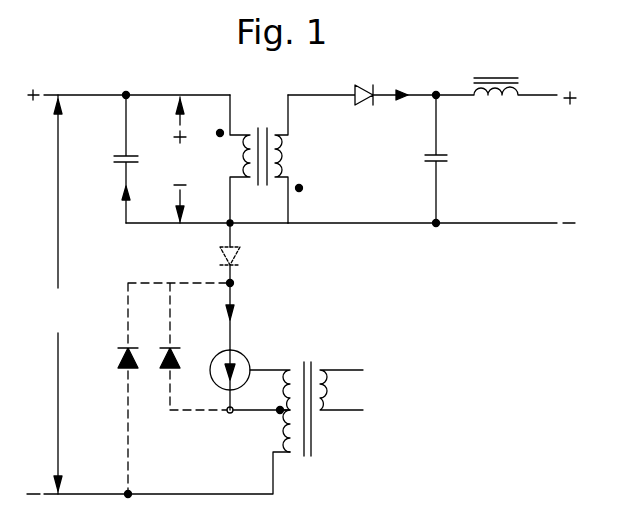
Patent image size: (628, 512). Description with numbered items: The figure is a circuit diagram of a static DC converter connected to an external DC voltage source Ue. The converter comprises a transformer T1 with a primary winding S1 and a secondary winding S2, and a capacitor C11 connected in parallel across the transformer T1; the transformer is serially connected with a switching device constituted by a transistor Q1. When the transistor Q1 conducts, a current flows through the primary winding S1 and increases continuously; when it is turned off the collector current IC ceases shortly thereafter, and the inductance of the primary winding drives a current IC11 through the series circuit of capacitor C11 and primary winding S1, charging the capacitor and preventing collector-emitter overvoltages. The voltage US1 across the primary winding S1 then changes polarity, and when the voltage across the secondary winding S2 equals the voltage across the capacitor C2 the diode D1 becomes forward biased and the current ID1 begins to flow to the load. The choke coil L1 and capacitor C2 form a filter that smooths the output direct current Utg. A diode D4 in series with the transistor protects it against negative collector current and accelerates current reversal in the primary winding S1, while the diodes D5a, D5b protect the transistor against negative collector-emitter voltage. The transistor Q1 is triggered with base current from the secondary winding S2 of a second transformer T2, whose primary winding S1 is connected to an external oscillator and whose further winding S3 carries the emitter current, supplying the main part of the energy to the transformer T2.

The external DC voltage source Ue is at (49, 294).
The capacitor C11 is at (115, 158).
The capacitor current IC11 is at (111, 193).
The voltage across the primary winding US1 is at (179, 160).
The transformer T1 is at (290, 252).
The primary winding S1 is at (290, 252).
The secondary winding S2 is at (285, 252).
The further winding S3 is at (272, 431).
The diode D1 is at (362, 112).
The diode current ID1 is at (411, 79).
The capacitor C2 is at (448, 159).
The choke coil L1 is at (496, 103).
The output voltage Utg is at (443, 157).
The diode D4 is at (249, 286).
The collector current IC is at (241, 315).
The transistor Q1 is at (222, 370).
The diode D5a is at (190, 373).
The diode D5b is at (113, 373).
The second transformer T2 is at (279, 399).